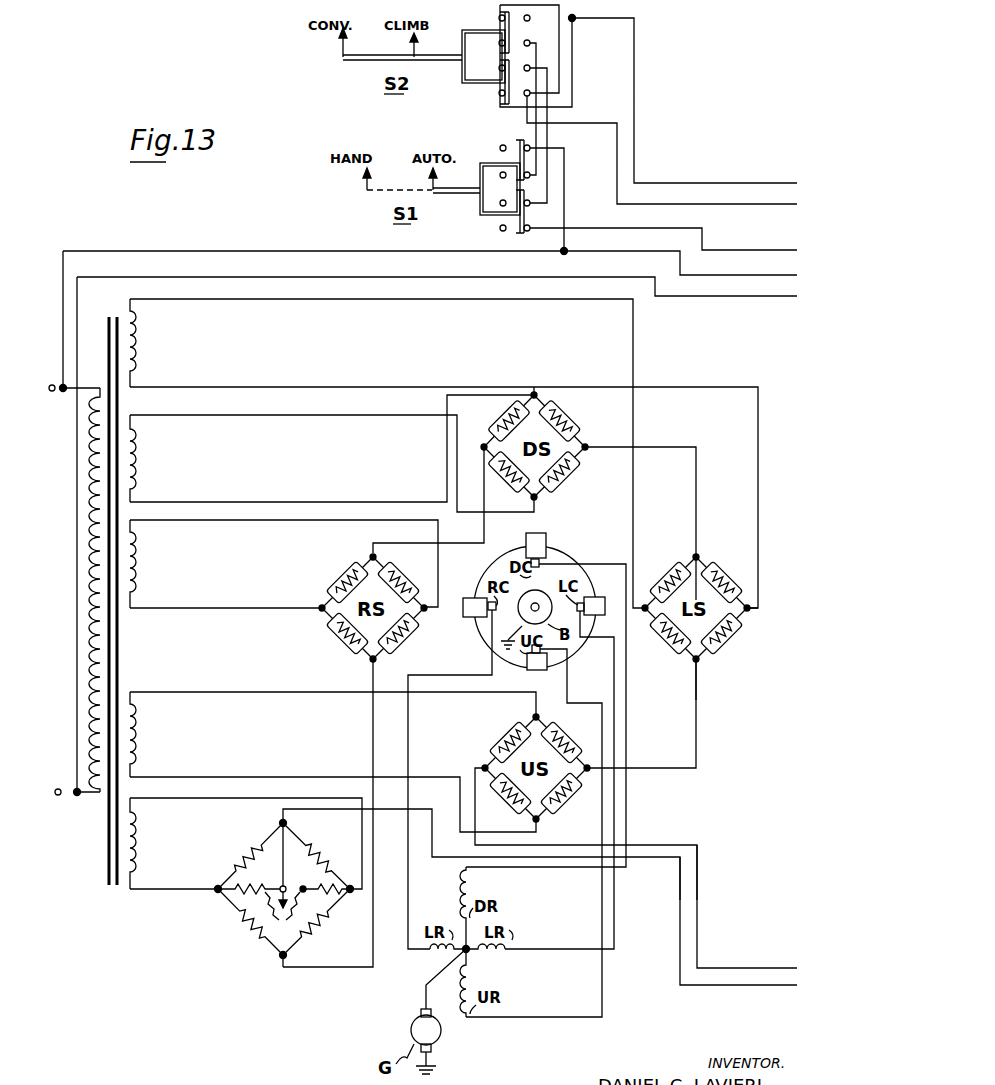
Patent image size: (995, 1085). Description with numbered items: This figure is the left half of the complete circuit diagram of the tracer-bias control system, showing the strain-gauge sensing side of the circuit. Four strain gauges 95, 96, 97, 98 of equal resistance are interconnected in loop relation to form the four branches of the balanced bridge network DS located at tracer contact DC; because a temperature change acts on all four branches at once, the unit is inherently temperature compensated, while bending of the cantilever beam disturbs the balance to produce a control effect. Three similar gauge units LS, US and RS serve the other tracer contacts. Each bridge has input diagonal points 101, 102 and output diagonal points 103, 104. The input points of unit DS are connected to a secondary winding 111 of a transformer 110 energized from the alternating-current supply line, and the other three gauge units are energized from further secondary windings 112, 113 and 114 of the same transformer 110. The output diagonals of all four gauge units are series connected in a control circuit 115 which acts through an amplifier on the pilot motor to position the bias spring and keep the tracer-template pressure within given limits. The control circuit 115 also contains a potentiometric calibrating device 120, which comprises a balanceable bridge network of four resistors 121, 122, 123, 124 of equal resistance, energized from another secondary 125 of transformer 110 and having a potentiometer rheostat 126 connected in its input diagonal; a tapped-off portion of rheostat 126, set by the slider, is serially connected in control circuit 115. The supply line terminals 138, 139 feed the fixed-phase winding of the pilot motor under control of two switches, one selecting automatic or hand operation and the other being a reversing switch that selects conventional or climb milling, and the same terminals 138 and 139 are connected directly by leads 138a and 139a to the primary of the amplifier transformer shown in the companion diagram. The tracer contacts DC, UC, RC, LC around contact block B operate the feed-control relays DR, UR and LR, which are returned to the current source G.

The strain gauge 95 is at (505, 418).
The strain gauge 96 is at (561, 478).
The strain gauge 97 is at (565, 419).
The strain gauge 98 is at (505, 478).
The input diagonal point 101 is at (535, 385).
The input diagonal point 102 is at (550, 506).
The output diagonal point 103 is at (483, 447).
The output diagonal point 104 is at (596, 448).
The transformer 110 is at (113, 824).
The secondary winding 111 is at (133, 493).
The secondary winding 112 is at (131, 372).
The secondary winding 113 is at (133, 762).
The secondary winding 114 is at (133, 592).
The control circuit 115 is at (692, 486).
The calibrating device 120 is at (501, 904).
The resistor 121 is at (239, 859).
The resistor 122 is at (328, 858).
The resistor 123 is at (247, 937).
The resistor 124 is at (320, 930).
The secondary winding 125 is at (135, 875).
The potentiometer rheostat 126 is at (284, 879).
The terminal 138 is at (70, 392).
The lead 138a is at (222, 251).
The terminal 139 is at (76, 790).
The lead 139a is at (266, 277).